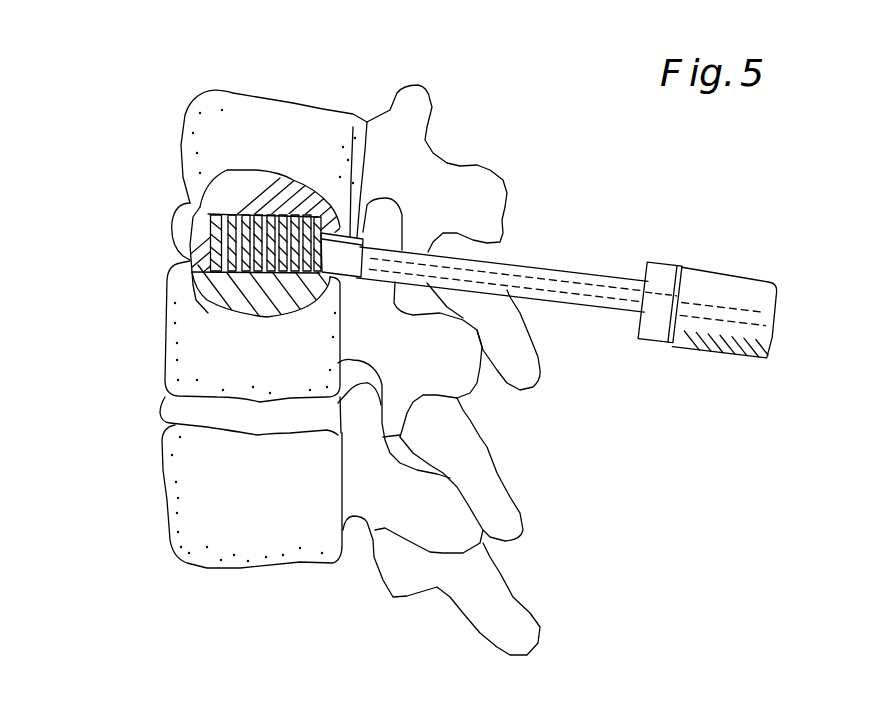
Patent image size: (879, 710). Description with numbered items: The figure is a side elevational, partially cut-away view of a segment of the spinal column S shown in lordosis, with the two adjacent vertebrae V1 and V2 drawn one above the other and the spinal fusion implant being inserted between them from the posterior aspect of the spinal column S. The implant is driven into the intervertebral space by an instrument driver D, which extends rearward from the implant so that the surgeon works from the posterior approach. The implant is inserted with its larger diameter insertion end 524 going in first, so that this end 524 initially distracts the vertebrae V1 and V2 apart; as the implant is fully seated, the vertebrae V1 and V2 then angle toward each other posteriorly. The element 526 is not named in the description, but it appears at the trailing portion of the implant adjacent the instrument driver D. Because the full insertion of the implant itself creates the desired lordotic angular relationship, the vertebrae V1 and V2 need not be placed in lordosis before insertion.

The spinal column S is at (170, 126).
The vertebra V1 is at (302, 141).
The vertebra V2 is at (277, 352).
The insertion end 524 is at (203, 195).
The implant head 526 is at (324, 277).
The instrument driver D is at (716, 260).